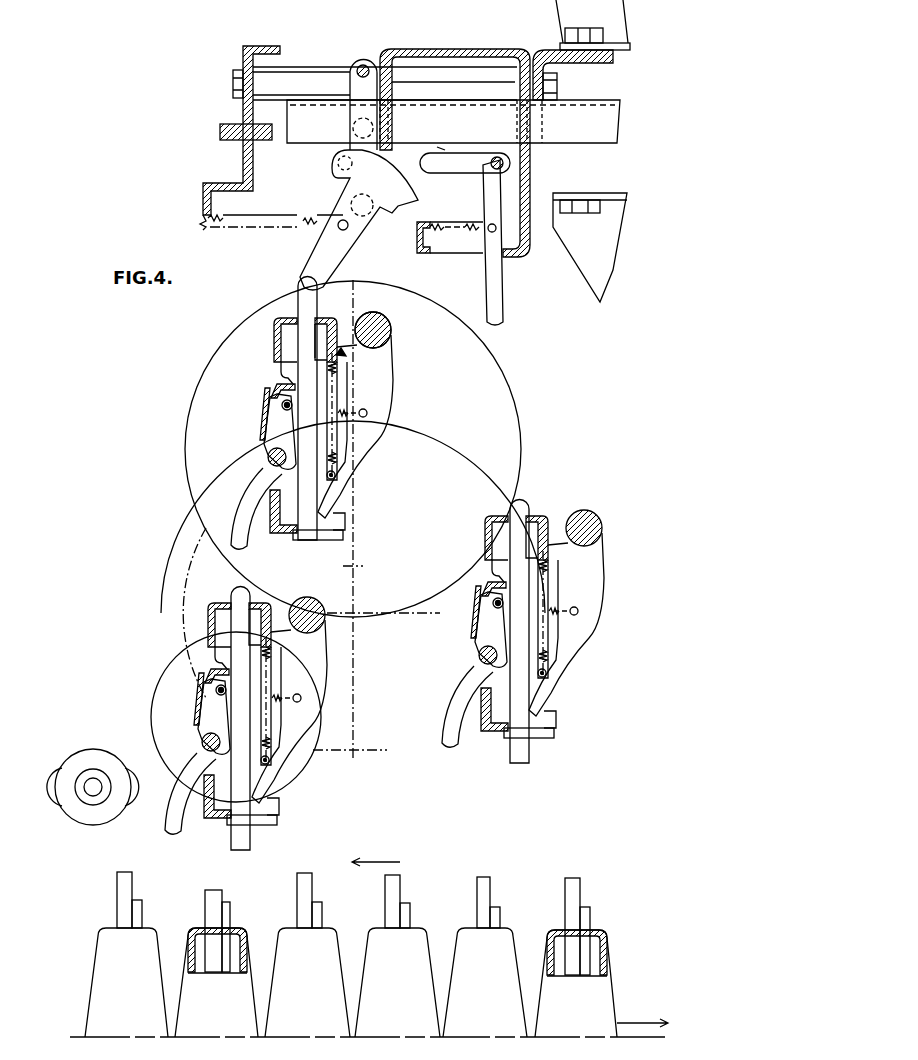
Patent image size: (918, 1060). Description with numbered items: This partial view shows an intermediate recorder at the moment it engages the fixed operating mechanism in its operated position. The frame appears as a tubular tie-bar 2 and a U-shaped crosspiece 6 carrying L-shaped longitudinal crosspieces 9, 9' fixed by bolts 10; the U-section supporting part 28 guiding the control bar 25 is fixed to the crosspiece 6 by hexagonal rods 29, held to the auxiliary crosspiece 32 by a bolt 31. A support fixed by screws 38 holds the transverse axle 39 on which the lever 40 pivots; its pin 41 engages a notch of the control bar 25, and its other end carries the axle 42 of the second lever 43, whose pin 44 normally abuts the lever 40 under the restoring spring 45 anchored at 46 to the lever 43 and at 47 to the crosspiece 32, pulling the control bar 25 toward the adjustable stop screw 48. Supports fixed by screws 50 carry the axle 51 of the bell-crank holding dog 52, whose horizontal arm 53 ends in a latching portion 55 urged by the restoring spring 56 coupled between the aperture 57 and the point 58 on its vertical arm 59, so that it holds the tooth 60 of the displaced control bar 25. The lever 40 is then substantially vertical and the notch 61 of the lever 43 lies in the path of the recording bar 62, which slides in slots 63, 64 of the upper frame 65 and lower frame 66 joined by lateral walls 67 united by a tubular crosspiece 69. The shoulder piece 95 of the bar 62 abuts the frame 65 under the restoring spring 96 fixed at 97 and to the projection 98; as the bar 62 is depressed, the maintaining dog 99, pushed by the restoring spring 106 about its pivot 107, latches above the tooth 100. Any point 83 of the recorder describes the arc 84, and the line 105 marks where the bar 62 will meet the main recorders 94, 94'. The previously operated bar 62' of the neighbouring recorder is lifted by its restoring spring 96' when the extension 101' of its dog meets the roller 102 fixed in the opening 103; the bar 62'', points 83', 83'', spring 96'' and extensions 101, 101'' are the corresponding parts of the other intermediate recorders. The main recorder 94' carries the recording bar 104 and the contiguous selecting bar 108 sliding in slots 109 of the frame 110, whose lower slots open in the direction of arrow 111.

The tubular tie-bar 2 is at (520, 100).
The U-shaped crosspiece 6 is at (540, 52).
The L-shaped longitudinal crosspiece 9 is at (601, 21).
The L-shaped longitudinal crosspiece 9' is at (590, 247).
The bolt 10 is at (605, 48).
The control bar 25 is at (503, 137).
The supporting part 28 is at (455, 49).
The hexagonal rod 29 is at (292, 66).
The bolt 31 is at (233, 78).
The auxiliary crosspiece 32 is at (258, 50).
The screw 38 is at (390, 98).
The transverse axle 39 is at (368, 66).
The lever 40 is at (360, 60).
The pin 41 is at (380, 102).
The axle 42 is at (370, 210).
The second lever 43 is at (381, 195).
The pin 44 is at (338, 166).
The restoring spring 45 is at (285, 230).
The spring fixing point on second lever 46 is at (348, 230).
The spring fixing point on auxiliary crosspiece 47 is at (203, 218).
The adjustable stop screw 48 is at (220, 133).
The screw 50 is at (495, 206).
The axle 51 is at (491, 163).
The holding dog 52 is at (500, 211).
The horizontal arm 53 is at (445, 166).
The latching portion 55 is at (437, 147).
The restoring spring 56 is at (452, 235).
The aperture 57 is at (417, 224).
The spring attachment point 58 is at (500, 252).
The vertical arm 59 is at (490, 299).
The tooth 60 is at (437, 147).
The notch 61 is at (288, 286).
The recording bar 62 is at (321, 408).
The recording bar 62' is at (544, 618).
The plunger rod 62'' is at (217, 707).
The slot 63 is at (290, 318).
The slot 64 is at (293, 535).
The upper frame 65 is at (274, 332).
The lower frame 66 is at (273, 517).
The lateral wall 67 is at (380, 371).
The tubular crosspiece 69 is at (391, 326).
The point 83 is at (286, 428).
The latch arm 83' is at (531, 626).
The latch arm 83'' is at (227, 713).
The arc 84 is at (463, 452).
The main recorder 94 is at (216, 963).
The main recorder 94' is at (576, 983).
The shoulder piece 95 is at (302, 341).
The restoring spring 96 is at (350, 416).
The restoring spring 96' is at (564, 614).
The spring 96'' is at (288, 701).
The spring fixing point on frame 97 is at (347, 355).
The projection 98 is at (322, 470).
The maintaining dog 99 is at (280, 415).
The tooth 100 is at (290, 374).
The lever 101 is at (243, 508).
The extension 101' is at (447, 706).
The lever 101'' is at (168, 793).
The roller 102 is at (93, 749).
The opening 103 is at (136, 770).
The recording bar 104 is at (570, 884).
The line 105 is at (376, 653).
The restoring spring 106 is at (350, 418).
The pivot 107 is at (270, 452).
The selecting bar 108 is at (584, 920).
The slot 109 is at (563, 930).
The frame 110 is at (550, 940).
The arrow 111 is at (639, 1008).